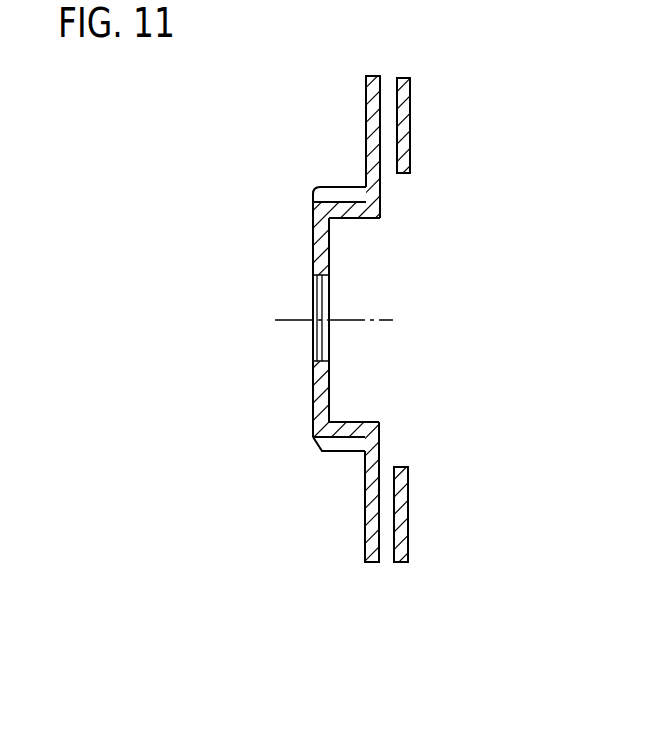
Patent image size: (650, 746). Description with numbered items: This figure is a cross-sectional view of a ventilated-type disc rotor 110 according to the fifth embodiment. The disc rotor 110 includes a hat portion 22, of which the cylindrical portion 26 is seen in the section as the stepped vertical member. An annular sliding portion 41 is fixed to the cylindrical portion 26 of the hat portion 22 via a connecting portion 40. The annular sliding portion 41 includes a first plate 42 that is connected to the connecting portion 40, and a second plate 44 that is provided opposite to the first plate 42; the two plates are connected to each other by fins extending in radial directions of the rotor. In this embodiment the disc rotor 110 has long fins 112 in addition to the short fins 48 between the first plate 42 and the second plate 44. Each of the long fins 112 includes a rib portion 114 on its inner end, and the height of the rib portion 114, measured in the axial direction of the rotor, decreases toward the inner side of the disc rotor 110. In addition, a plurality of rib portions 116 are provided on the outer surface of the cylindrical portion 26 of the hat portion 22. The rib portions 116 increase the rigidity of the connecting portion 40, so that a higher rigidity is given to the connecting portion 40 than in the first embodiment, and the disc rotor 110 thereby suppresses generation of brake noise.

The hat portion 22 is at (305, 394).
The cylindrical portion 26 is at (345, 427).
The connecting portion 40 is at (376, 216).
The annular sliding portion 41 is at (417, 496).
The first plate 42 is at (373, 108).
The second plate 44 is at (405, 105).
The short fins 48 is at (387, 555).
The disc rotor 110 is at (417, 143).
The long fins 112 is at (388, 84).
The rib portion 114 is at (392, 188).
The rib portions 116 is at (333, 190).